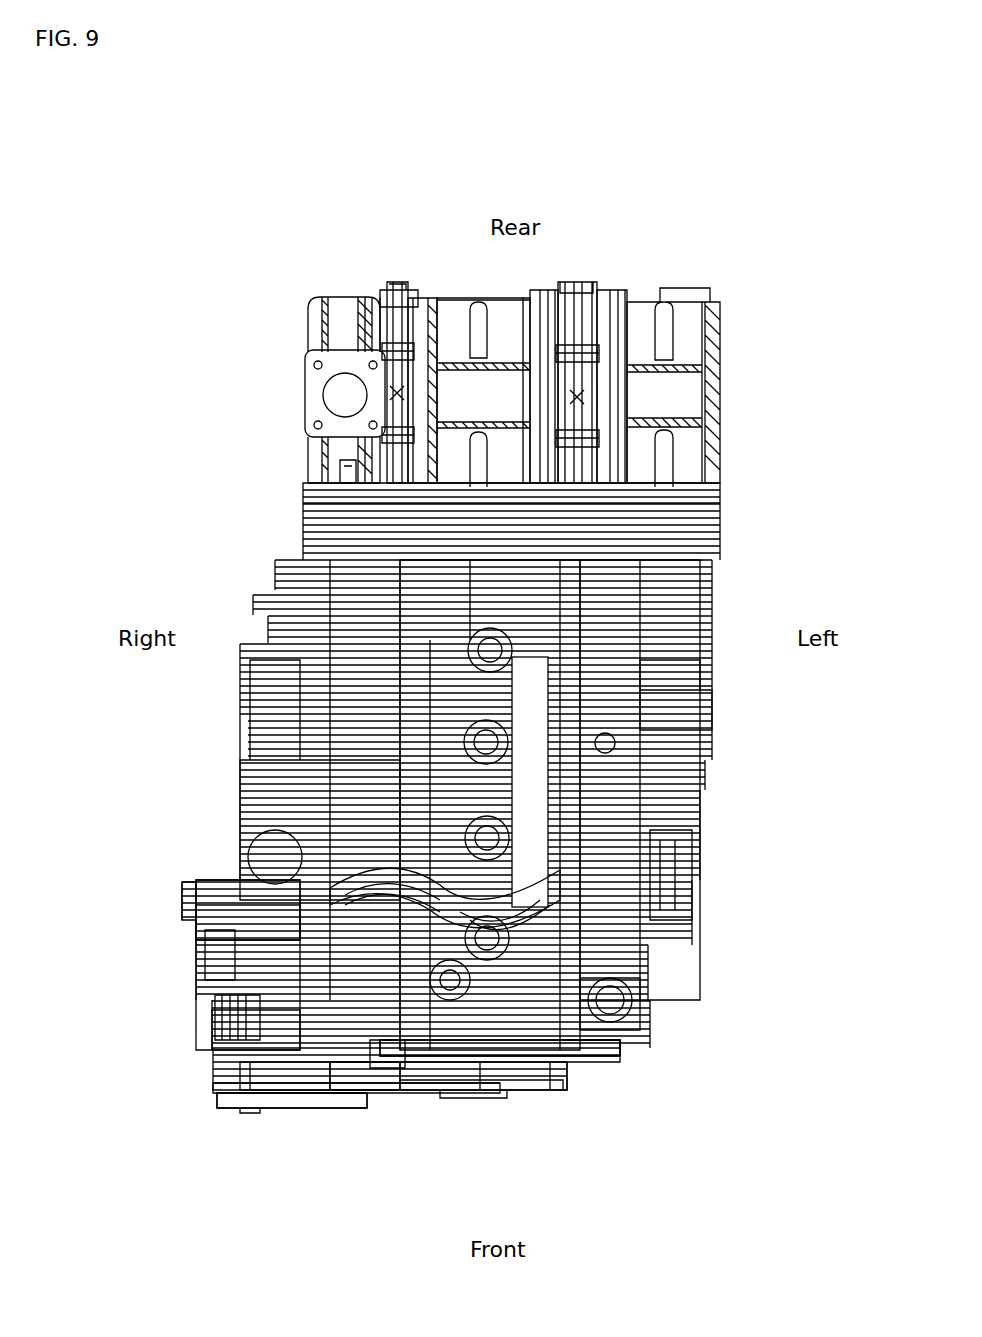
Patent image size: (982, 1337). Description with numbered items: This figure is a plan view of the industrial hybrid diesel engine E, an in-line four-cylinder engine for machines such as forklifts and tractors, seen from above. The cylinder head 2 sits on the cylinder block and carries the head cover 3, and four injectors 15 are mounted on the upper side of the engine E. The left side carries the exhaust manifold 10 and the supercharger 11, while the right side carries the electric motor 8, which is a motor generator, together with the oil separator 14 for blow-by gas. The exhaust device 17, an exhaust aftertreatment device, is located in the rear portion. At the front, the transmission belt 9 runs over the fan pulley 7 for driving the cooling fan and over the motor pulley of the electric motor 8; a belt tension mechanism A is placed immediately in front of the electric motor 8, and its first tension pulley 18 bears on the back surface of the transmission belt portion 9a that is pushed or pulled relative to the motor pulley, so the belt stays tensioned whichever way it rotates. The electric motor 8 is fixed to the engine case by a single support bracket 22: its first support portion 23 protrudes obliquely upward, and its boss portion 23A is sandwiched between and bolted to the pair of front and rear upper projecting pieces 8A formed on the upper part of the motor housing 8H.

The exhaust device 17 is at (343, 296).
The industrial hybrid engine E is at (769, 508).
The supercharger 11 is at (707, 693).
The head cover 3 is at (583, 822).
The exhaust manifold 10 is at (617, 920).
The injectors 15 is at (516, 662).
The cylinder head 2 is at (540, 1048).
The fan pulley 7 is at (538, 1040).
The transmission belt portion 9a is at (402, 1072).
The transmission belt 9 is at (500, 1140).
The support bracket 22 is at (388, 1060).
The first tension pulley 18 is at (350, 1075).
The upper projecting pieces 8A is at (275, 1102).
The belt tension mechanism A is at (217, 1107).
The motor housing 8H is at (205, 1025).
The electric motor 8 is at (208, 984).
The first support portion 23 is at (217, 975).
The boss portion 23A is at (196, 910).
The oil separator 14 is at (240, 800).